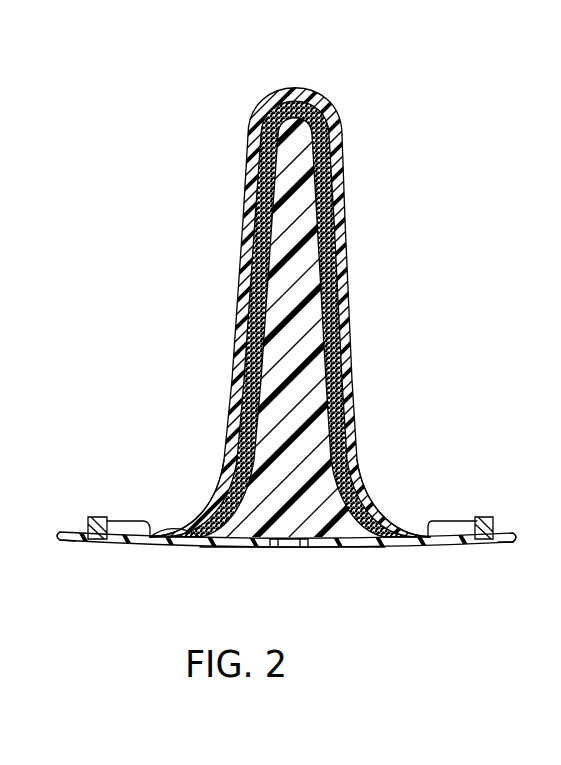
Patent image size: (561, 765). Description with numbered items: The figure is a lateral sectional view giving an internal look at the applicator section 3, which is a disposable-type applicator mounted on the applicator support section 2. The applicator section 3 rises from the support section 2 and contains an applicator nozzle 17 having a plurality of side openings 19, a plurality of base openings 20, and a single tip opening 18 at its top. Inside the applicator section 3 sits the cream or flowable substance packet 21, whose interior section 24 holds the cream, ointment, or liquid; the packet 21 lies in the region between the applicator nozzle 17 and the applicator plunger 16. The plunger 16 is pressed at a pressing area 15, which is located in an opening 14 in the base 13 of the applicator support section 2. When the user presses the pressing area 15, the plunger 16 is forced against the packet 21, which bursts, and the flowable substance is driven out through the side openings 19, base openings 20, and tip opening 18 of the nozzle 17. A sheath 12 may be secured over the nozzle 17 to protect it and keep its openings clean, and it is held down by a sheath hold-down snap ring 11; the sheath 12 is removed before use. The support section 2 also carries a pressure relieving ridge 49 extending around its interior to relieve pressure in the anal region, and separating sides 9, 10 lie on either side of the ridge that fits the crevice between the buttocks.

The applicator support section 2 is at (148, 547).
The applicator section 3 is at (375, 276).
The separating side 9 is at (508, 532).
The separating side 10 is at (60, 533).
The sheath hold-down snap ring 11 is at (150, 530).
The sheath 12 is at (188, 527).
The base 13 is at (225, 548).
The opening 14 is at (308, 548).
The pressing area 15 is at (281, 548).
The applicator plunger 16 is at (307, 540).
The applicator nozzle 17 is at (237, 427).
The single tip opening 18 is at (297, 90).
The side openings 19 is at (250, 244).
The base openings 20 is at (218, 500).
The cream or flowable substance packet 21 is at (337, 441).
The interior section 24 is at (263, 348).
The pressure relieving ridge 49 is at (105, 518).